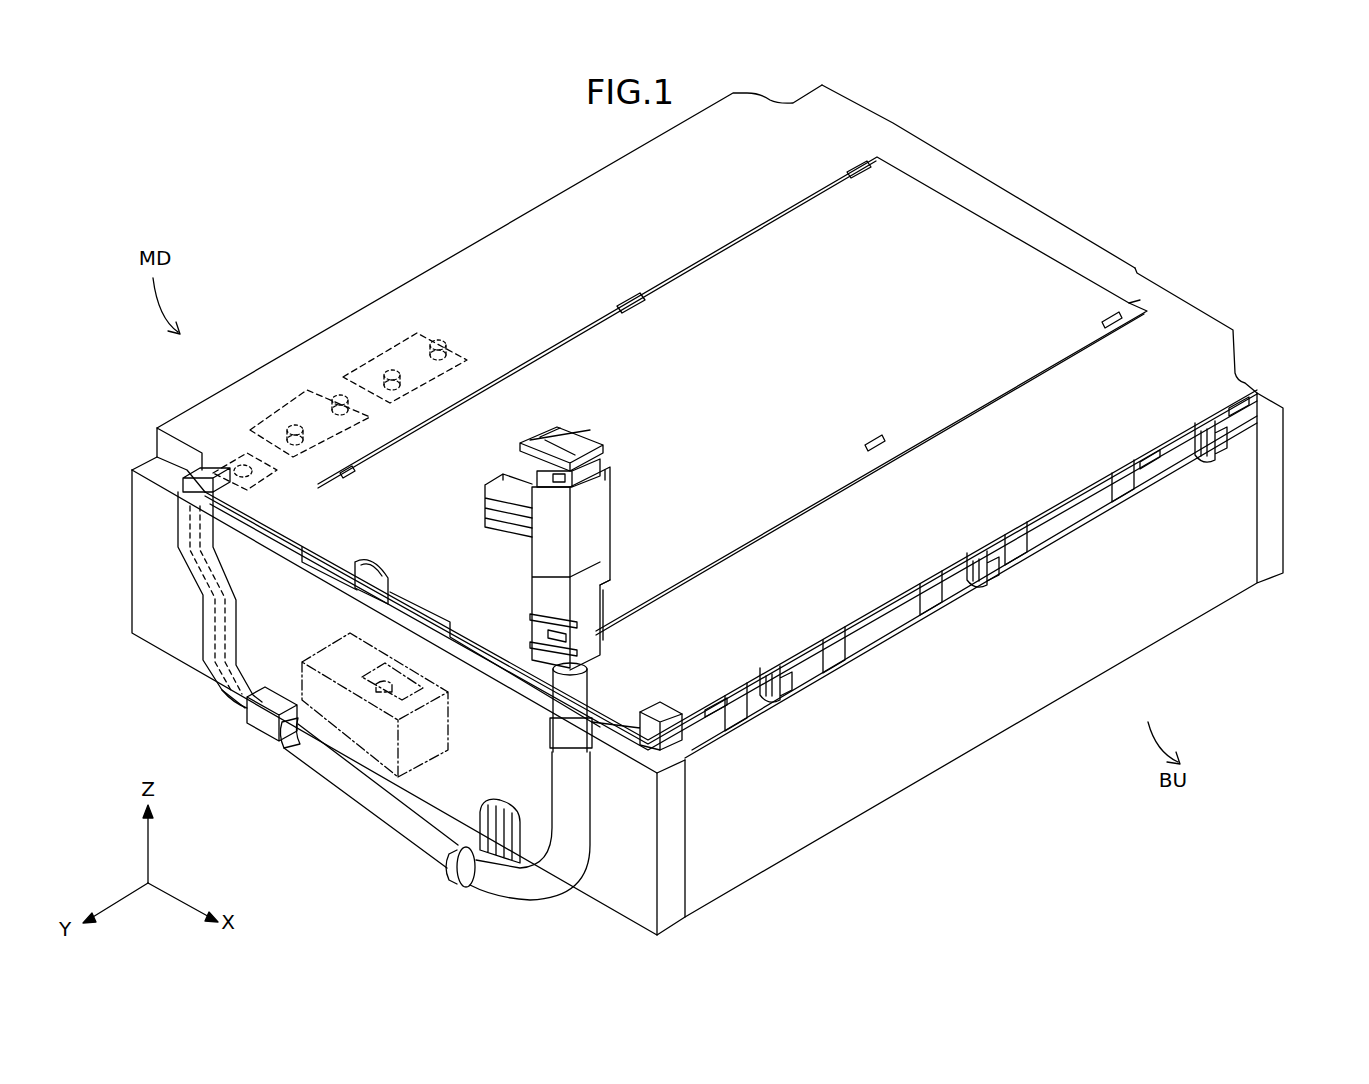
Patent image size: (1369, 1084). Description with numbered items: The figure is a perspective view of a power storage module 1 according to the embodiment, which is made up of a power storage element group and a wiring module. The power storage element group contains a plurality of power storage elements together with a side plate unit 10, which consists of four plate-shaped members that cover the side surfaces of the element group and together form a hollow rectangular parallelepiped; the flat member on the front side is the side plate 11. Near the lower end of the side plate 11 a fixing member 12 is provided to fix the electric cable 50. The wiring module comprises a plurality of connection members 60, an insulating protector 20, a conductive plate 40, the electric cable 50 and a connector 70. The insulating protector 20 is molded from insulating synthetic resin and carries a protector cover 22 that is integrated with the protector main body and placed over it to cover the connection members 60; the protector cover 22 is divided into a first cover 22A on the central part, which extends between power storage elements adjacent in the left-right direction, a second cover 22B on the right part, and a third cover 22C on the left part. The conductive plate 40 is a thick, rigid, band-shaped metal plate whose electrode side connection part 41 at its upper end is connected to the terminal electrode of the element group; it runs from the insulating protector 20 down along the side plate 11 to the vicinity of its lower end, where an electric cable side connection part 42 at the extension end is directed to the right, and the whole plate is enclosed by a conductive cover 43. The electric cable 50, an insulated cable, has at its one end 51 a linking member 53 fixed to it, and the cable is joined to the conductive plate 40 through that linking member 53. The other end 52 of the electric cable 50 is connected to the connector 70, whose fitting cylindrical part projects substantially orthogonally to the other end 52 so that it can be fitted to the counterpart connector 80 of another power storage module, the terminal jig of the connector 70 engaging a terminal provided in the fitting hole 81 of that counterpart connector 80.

The power storage module 1 is at (374, 150).
The side plate unit 10 is at (130, 495).
The side plate 11 is at (623, 868).
The fixing member 12 is at (438, 860).
The insulating protector 20 is at (517, 172).
The protector cover 22 is at (1024, 94).
The first cover 22A is at (1007, 263).
The second cover 22B is at (1183, 318).
The third cover 22C is at (886, 137).
The conductive plate 40 is at (203, 577).
The electrode side connection part 41 is at (227, 473).
The electric cable side connection part 42 is at (240, 710).
The conductive cover 43 is at (193, 525).
The electric cable 50 is at (494, 878).
The one end 51 is at (288, 735).
The other end 52 is at (587, 677).
The linking member 53 is at (262, 723).
The connection member 60 is at (370, 360).
The connector 70 is at (623, 527).
The counterpart connector 80 is at (373, 733).
The fitting hole 81 is at (380, 690).